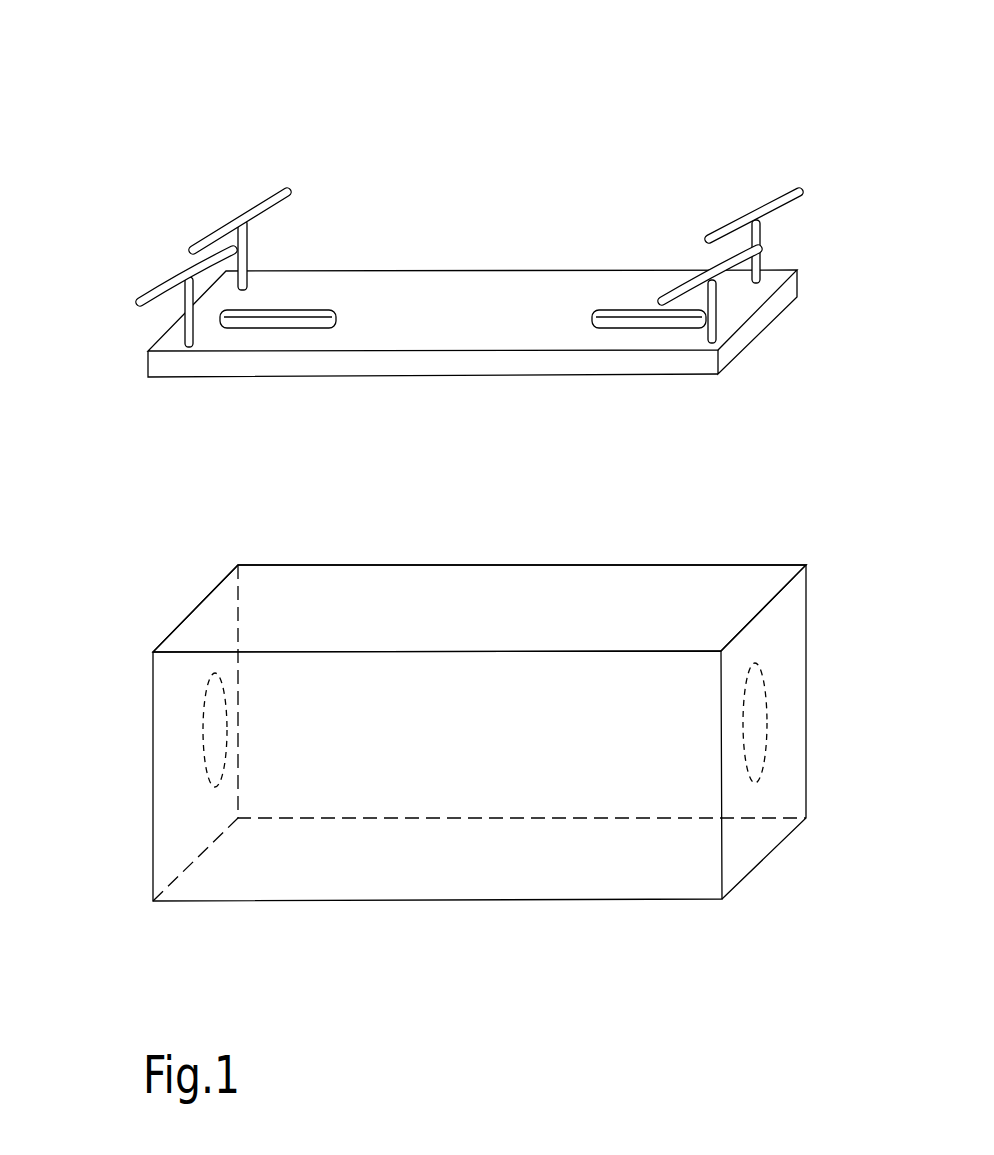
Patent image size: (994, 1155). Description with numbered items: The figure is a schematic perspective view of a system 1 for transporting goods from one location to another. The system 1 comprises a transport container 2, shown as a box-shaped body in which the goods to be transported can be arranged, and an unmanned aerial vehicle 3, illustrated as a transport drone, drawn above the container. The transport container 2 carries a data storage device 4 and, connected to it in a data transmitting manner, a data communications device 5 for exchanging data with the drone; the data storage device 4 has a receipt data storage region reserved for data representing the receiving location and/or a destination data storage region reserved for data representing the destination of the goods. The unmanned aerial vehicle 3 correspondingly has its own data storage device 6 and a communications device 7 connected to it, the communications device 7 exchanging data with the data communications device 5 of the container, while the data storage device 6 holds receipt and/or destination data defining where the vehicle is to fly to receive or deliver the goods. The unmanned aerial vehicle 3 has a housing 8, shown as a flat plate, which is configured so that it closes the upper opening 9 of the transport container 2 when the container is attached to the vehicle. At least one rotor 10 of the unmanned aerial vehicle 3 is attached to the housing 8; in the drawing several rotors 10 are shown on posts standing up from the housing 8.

The system 1 is at (473, 237).
The transport container 2 is at (460, 726).
The unmanned aerial vehicle 3 is at (829, 322).
The data storage device 4 is at (212, 768).
The data communications device 5 is at (769, 722).
The data storage device 6 is at (293, 306).
The communications device 7 is at (594, 312).
The housing 8 is at (146, 376).
The upper opening 9 is at (618, 605).
The rotor 10 is at (251, 184).